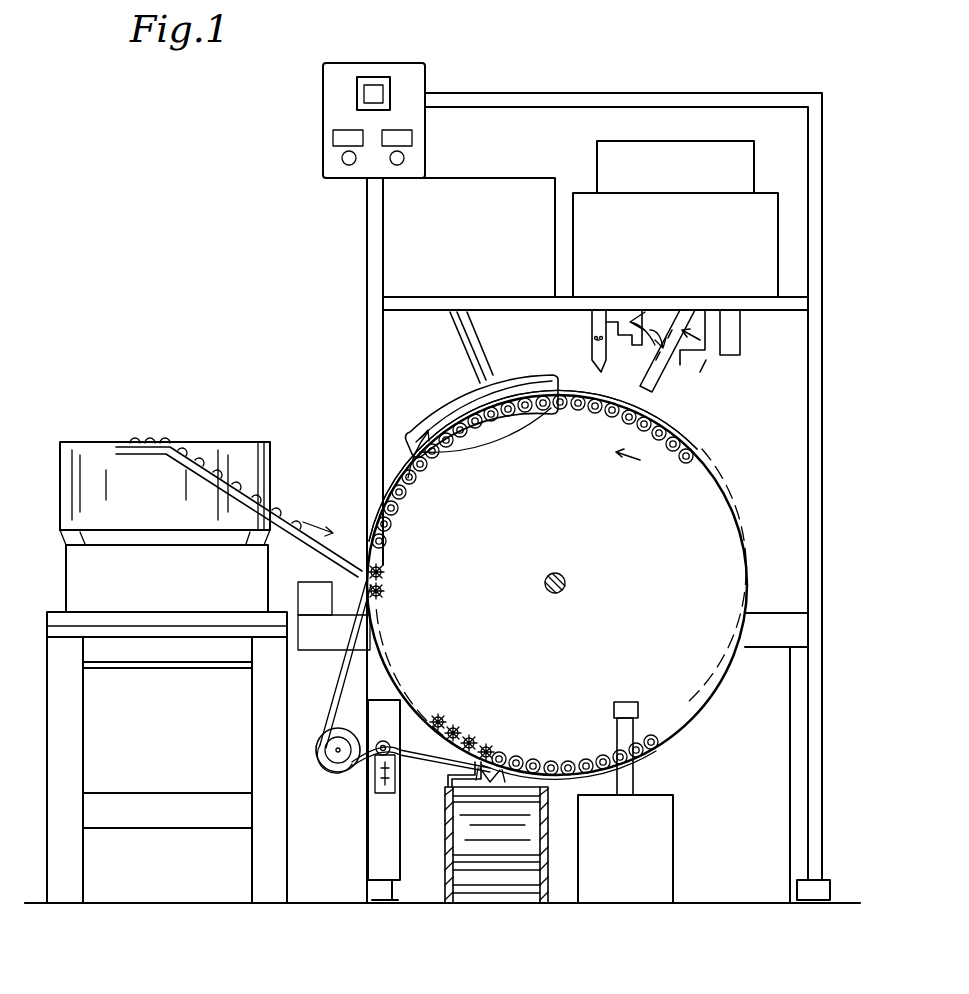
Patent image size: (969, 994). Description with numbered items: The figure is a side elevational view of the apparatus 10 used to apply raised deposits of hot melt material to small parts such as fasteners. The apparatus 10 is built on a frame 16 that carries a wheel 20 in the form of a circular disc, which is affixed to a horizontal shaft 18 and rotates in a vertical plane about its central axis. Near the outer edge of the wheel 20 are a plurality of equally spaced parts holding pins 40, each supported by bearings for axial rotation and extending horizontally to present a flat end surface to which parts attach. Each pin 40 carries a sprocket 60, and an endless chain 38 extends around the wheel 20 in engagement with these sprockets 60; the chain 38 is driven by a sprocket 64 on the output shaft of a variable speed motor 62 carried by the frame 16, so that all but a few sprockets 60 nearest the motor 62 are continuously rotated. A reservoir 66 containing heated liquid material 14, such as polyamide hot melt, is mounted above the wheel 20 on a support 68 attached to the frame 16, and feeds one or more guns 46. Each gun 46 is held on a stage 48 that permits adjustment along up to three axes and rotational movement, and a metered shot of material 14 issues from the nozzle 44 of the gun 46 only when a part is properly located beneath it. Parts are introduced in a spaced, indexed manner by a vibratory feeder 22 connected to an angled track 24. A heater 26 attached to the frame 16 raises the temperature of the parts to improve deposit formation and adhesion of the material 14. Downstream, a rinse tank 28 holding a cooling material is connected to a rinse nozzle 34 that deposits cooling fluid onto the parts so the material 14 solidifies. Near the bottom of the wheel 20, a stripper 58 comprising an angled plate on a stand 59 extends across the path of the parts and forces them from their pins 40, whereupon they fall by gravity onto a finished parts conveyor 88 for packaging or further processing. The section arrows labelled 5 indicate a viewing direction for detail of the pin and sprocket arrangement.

The apparatus 10 is at (556, 920).
The material 14 is at (672, 417).
The frame 16 is at (818, 437).
The horizontal shaft 18 is at (565, 583).
The wheel 20 is at (571, 528).
The vibratory feeder 22 is at (228, 452).
The angled track 24 is at (306, 530).
The heater 26 is at (530, 380).
The rinse tank 28 is at (670, 842).
The rinse nozzle 34 is at (638, 706).
The endless chain 38 is at (344, 676).
The parts holding pins 40 is at (632, 434).
The nozzle 44 is at (590, 364).
The gun 46 is at (654, 330).
The stage 48 is at (622, 322).
The section view arrows 5 is at (640, 462).
The stripper 58 is at (488, 750).
The stand 59 is at (445, 800).
The sprocket 60 is at (392, 590).
The variable speed motor 62 is at (318, 745).
The sprocket 64 is at (342, 738).
The reservoir 66 is at (676, 240).
The support 68 is at (732, 297).
The finished parts conveyor 88 is at (460, 835).